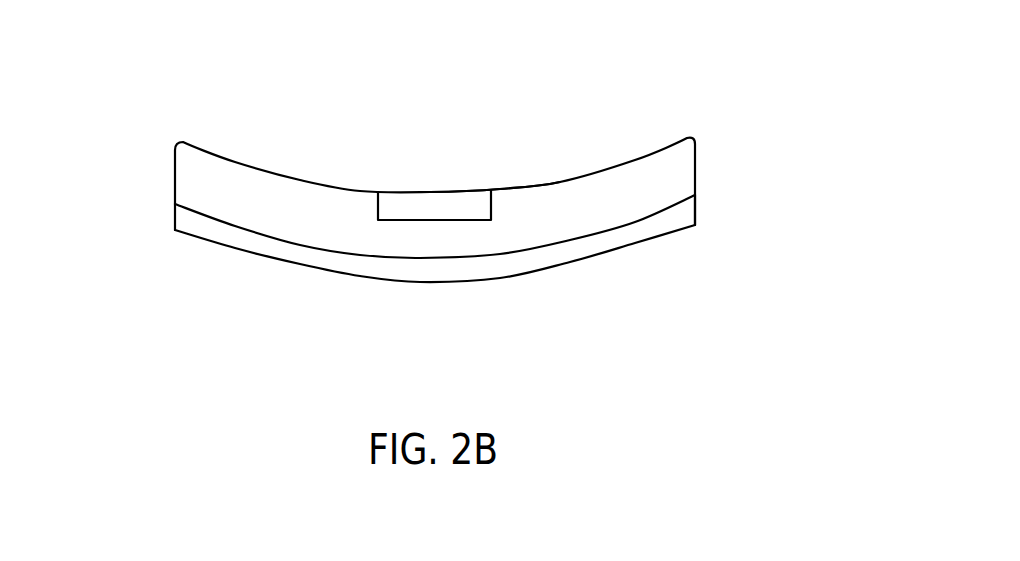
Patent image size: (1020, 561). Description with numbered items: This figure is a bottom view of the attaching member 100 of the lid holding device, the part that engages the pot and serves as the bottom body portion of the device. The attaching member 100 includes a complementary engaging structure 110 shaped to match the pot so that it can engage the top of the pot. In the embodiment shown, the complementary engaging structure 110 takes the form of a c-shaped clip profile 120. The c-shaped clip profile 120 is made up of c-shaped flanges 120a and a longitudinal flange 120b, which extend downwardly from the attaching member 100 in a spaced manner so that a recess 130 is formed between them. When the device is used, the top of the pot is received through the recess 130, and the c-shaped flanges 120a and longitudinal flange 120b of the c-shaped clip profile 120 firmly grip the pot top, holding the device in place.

The attaching member 100 is at (718, 72).
The complementary engaging structure 110 is at (698, 245).
The c-shaped clip profile 120 is at (167, 137).
The c-shaped flanges 120a is at (227, 232).
The longitudinal flange 120b is at (436, 207).
The recess 130 is at (488, 243).